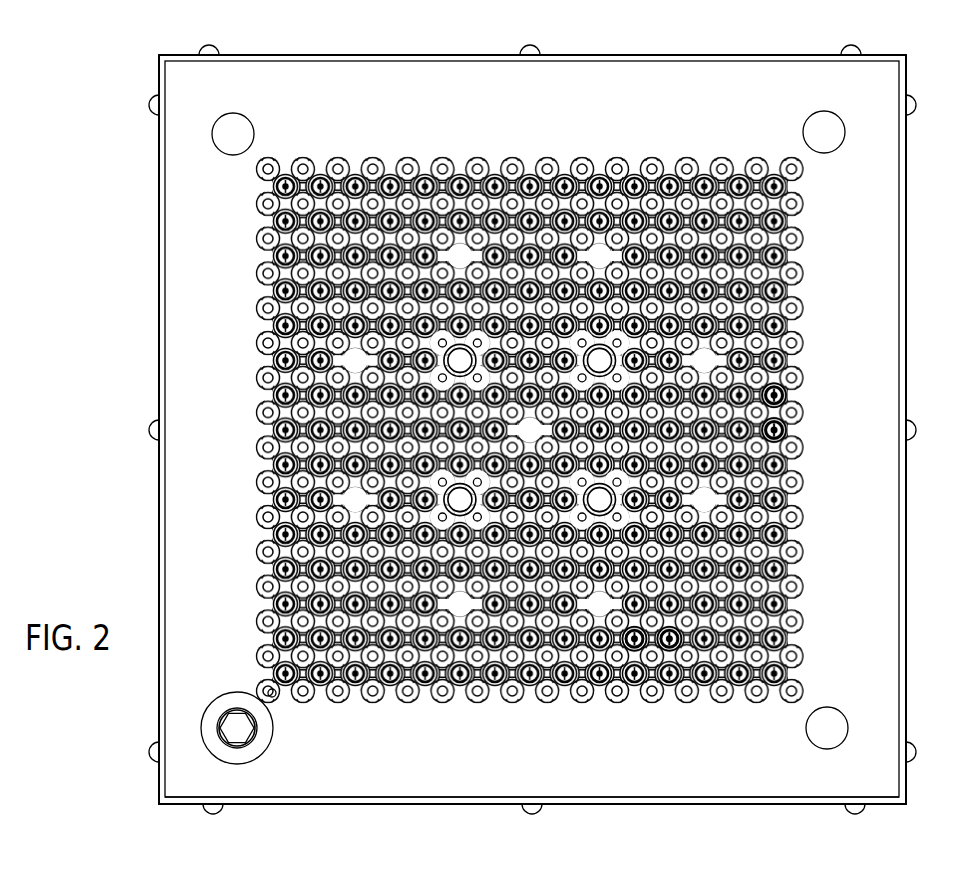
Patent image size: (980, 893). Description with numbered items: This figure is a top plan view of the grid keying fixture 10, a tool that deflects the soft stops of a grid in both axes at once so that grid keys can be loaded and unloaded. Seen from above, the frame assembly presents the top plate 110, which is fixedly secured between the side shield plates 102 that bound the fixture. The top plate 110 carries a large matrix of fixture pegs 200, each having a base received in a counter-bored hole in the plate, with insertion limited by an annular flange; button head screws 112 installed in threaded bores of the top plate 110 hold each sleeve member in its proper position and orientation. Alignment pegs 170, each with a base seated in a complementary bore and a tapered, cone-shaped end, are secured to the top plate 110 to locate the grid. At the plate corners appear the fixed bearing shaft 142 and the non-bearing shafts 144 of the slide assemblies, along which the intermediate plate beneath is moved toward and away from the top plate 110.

The grid keying fixture 10 is at (884, 51).
The side shield plates 102 is at (608, 55).
The top plate 110 is at (349, 776).
The button head screws 112 is at (798, 342).
The fixed bearing shaft 142 is at (804, 131).
The non-bearing shafts 144 is at (254, 134).
The alignment pegs 170 is at (465, 357).
The fixture pegs 200 is at (773, 430).